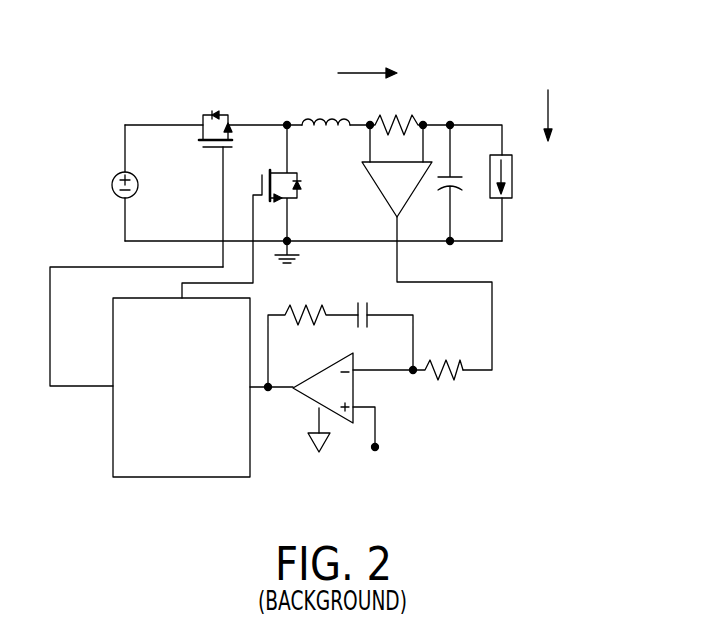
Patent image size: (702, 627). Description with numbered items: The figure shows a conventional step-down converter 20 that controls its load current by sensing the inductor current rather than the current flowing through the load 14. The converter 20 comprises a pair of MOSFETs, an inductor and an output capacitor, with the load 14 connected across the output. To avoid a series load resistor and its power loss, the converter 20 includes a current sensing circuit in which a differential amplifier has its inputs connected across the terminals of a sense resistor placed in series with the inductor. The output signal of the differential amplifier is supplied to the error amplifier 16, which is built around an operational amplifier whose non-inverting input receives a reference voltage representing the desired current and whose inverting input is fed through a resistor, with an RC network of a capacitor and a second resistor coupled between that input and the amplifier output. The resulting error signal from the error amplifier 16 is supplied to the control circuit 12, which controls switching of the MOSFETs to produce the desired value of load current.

The step-down converter 20 is at (478, 67).
The load 14 is at (509, 155).
The control circuit 12 is at (192, 430).
The error amplifier 16 is at (310, 397).